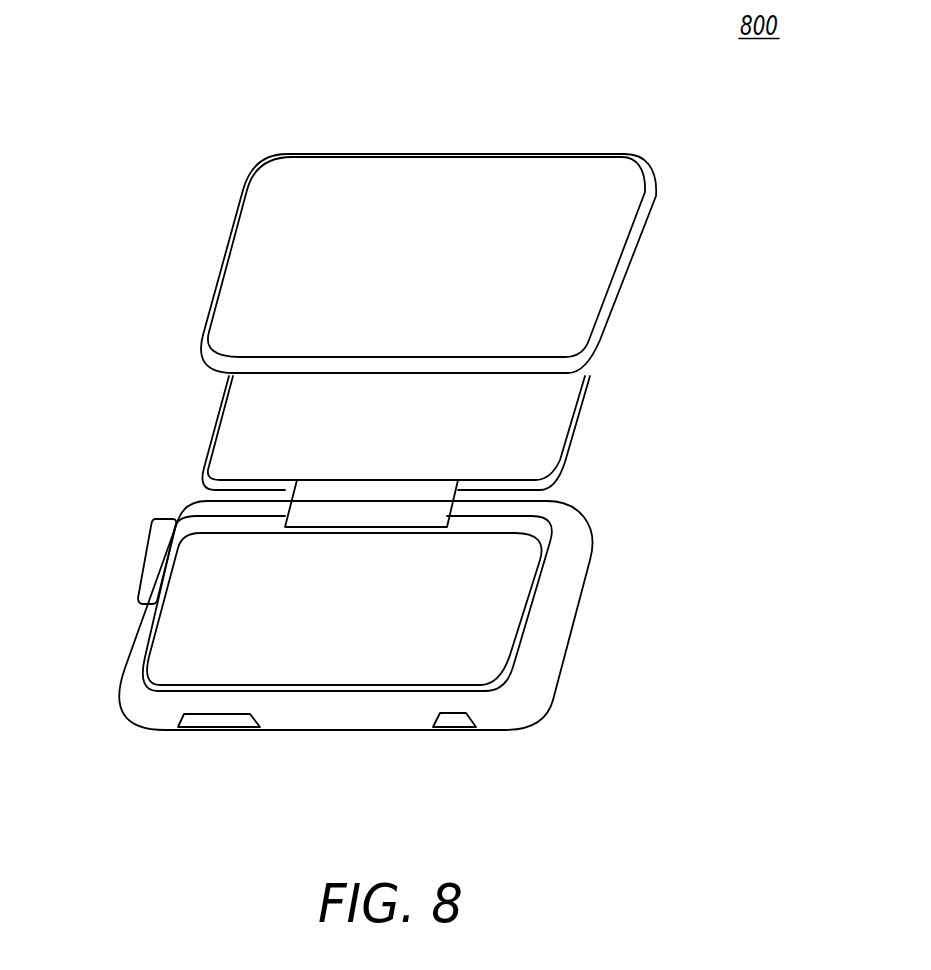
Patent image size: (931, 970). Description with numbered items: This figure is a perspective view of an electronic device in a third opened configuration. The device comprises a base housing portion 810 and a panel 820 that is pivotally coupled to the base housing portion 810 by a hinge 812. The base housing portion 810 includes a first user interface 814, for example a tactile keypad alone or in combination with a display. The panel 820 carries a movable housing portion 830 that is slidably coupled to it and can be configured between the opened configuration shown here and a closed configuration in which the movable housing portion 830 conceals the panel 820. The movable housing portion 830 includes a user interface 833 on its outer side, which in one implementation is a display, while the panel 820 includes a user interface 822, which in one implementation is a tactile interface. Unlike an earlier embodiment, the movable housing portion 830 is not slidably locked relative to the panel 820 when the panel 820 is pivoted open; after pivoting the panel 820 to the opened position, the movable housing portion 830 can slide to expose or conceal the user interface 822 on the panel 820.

The base housing portion 810 is at (162, 729).
The hinge 812 is at (433, 516).
The first user interface 814 is at (476, 643).
The panel 820 is at (581, 418).
The user interface 822 is at (213, 419).
The movable housing portion 830 is at (643, 218).
The user interface 833 is at (542, 180).